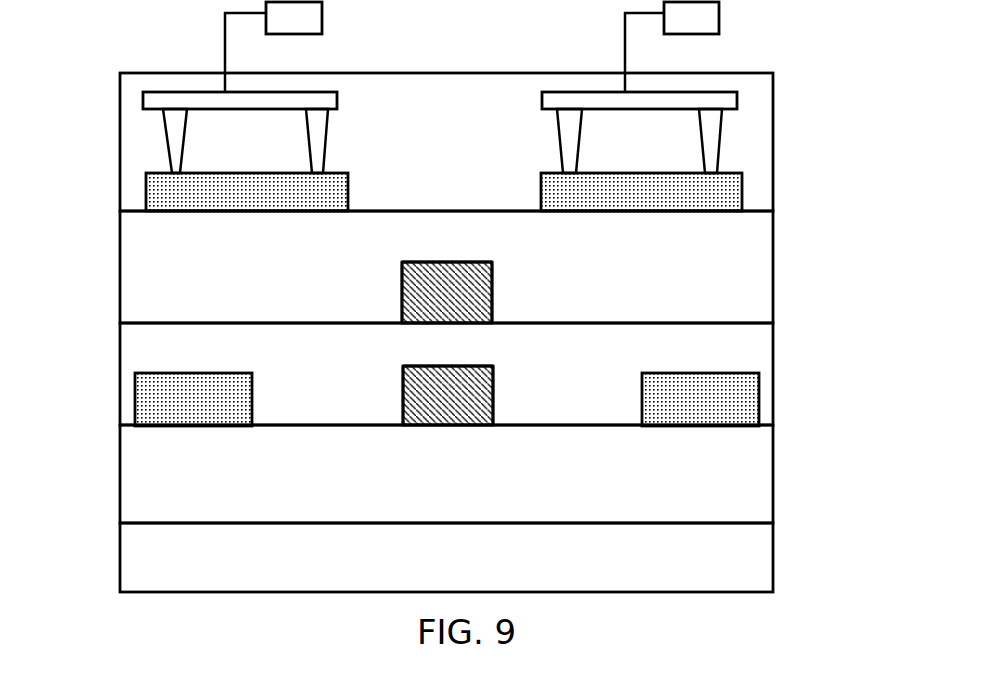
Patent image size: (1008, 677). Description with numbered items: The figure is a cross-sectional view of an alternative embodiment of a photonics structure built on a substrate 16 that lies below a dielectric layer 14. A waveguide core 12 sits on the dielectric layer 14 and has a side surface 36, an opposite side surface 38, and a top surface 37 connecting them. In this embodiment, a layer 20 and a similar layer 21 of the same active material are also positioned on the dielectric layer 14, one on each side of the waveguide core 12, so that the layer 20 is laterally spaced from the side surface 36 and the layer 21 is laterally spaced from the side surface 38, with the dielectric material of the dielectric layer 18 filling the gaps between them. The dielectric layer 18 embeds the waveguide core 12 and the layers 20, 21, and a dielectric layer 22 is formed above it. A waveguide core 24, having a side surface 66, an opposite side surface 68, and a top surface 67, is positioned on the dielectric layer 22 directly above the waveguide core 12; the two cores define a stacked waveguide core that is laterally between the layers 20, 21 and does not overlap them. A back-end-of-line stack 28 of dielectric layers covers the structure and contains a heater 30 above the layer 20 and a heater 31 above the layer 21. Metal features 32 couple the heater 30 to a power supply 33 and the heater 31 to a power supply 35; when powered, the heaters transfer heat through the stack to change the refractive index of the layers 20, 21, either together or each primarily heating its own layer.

The waveguide core 12 is at (436, 385).
The dielectric layer 14 is at (735, 483).
The substrate 16 is at (735, 555).
The dielectric layer 18 is at (727, 357).
The layer 20 is at (160, 403).
The layer 21 is at (727, 408).
The dielectric layer 22 is at (725, 255).
The waveguide core 24 is at (432, 282).
The back-end-of-line stack 28 is at (752, 91).
The heater 30 is at (322, 195).
The heater 31 is at (708, 197).
The metal features 32 is at (318, 138).
The power supply 33 is at (296, 21).
The power supply 35 is at (695, 21).
The side surface 36 is at (403, 414).
The top surface 37 is at (452, 366).
The side surface 38 is at (493, 400).
The side surface 66 is at (402, 310).
The top surface 67 is at (450, 262).
The side surface 68 is at (492, 300).